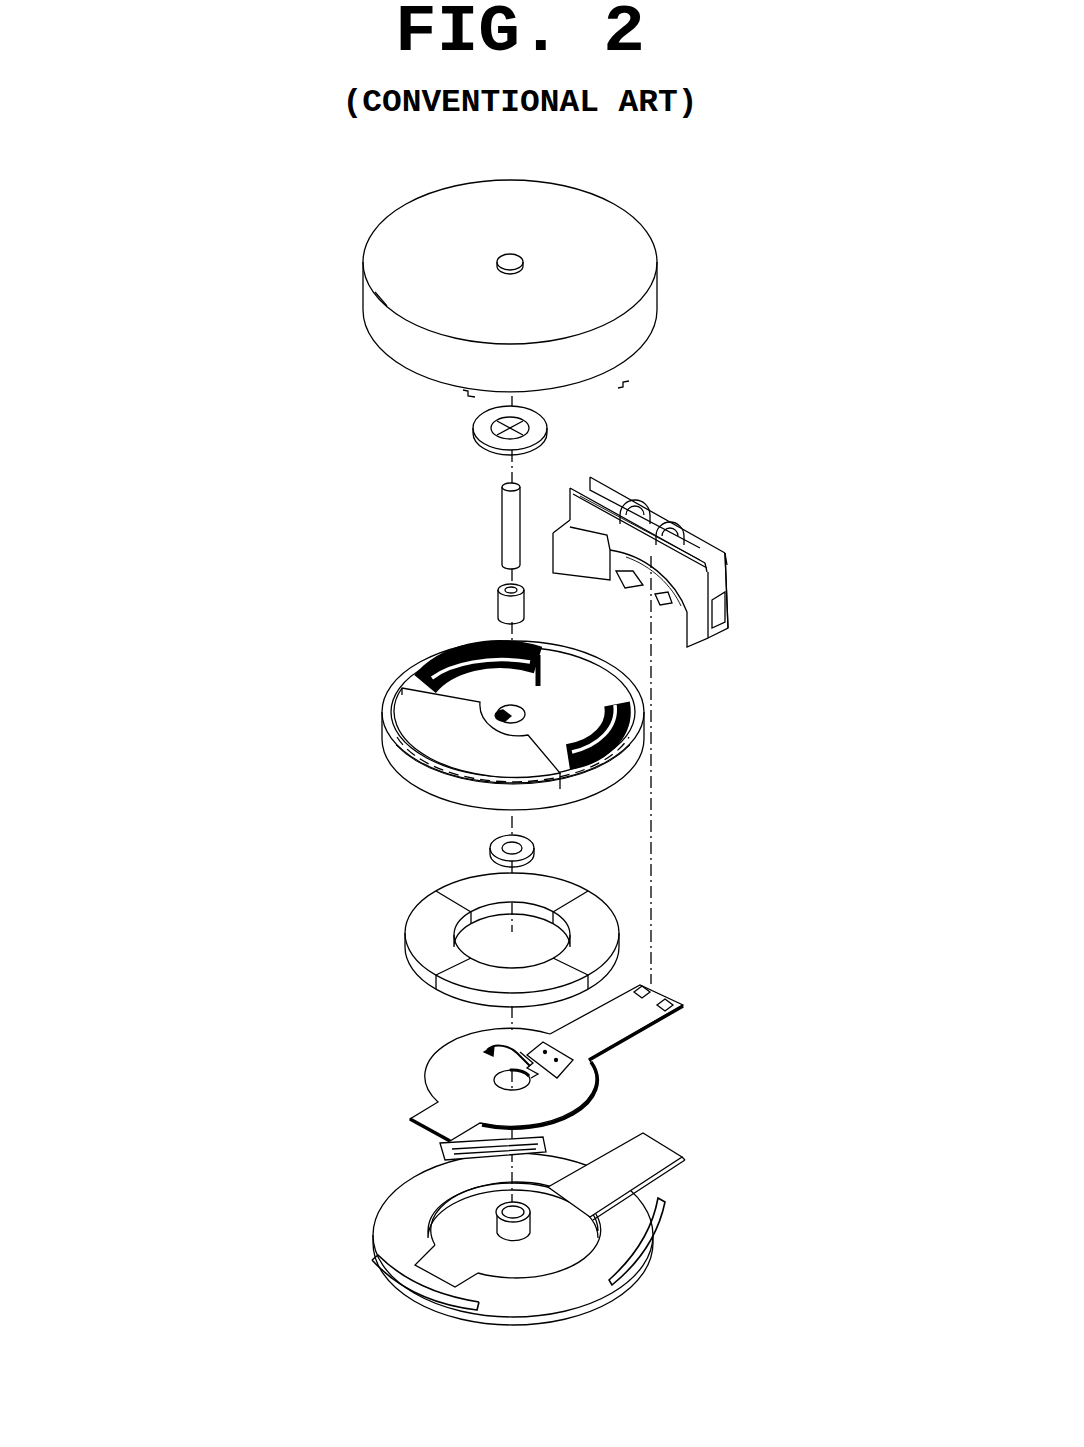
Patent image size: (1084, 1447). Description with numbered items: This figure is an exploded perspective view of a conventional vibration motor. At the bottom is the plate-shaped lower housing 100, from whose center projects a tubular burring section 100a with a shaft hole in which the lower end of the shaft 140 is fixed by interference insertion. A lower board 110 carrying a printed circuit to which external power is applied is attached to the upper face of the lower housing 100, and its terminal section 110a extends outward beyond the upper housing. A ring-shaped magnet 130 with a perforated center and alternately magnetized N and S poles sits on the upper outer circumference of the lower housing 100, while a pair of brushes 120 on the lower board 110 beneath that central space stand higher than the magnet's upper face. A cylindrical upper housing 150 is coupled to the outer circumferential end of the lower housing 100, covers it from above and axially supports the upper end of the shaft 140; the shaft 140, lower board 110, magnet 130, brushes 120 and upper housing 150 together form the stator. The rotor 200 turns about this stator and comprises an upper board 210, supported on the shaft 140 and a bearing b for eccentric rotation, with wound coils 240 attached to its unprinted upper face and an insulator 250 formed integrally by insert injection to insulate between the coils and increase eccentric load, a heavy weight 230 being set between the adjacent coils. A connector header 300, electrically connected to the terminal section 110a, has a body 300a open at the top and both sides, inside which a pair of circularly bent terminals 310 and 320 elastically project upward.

The lower housing 100 is at (495, 1229).
The tubular burring section 100a is at (527, 1228).
The lower board 110 is at (544, 1050).
The terminal section 110a is at (660, 1002).
The brushes 120 is at (488, 1050).
The magnet 130 is at (410, 928).
The shaft 140 is at (508, 525).
The bearing b is at (500, 602).
The upper housing 150 is at (650, 322).
The rotor 200 is at (476, 773).
The upper board 210 is at (590, 797).
The eccentric weight 230 is at (400, 705).
The wound coils 240 is at (622, 748).
The insulator 250 is at (617, 684).
The connector header 300 is at (722, 561).
The body 300a is at (748, 625).
The terminal 310 is at (684, 518).
The terminal 320 is at (640, 501).